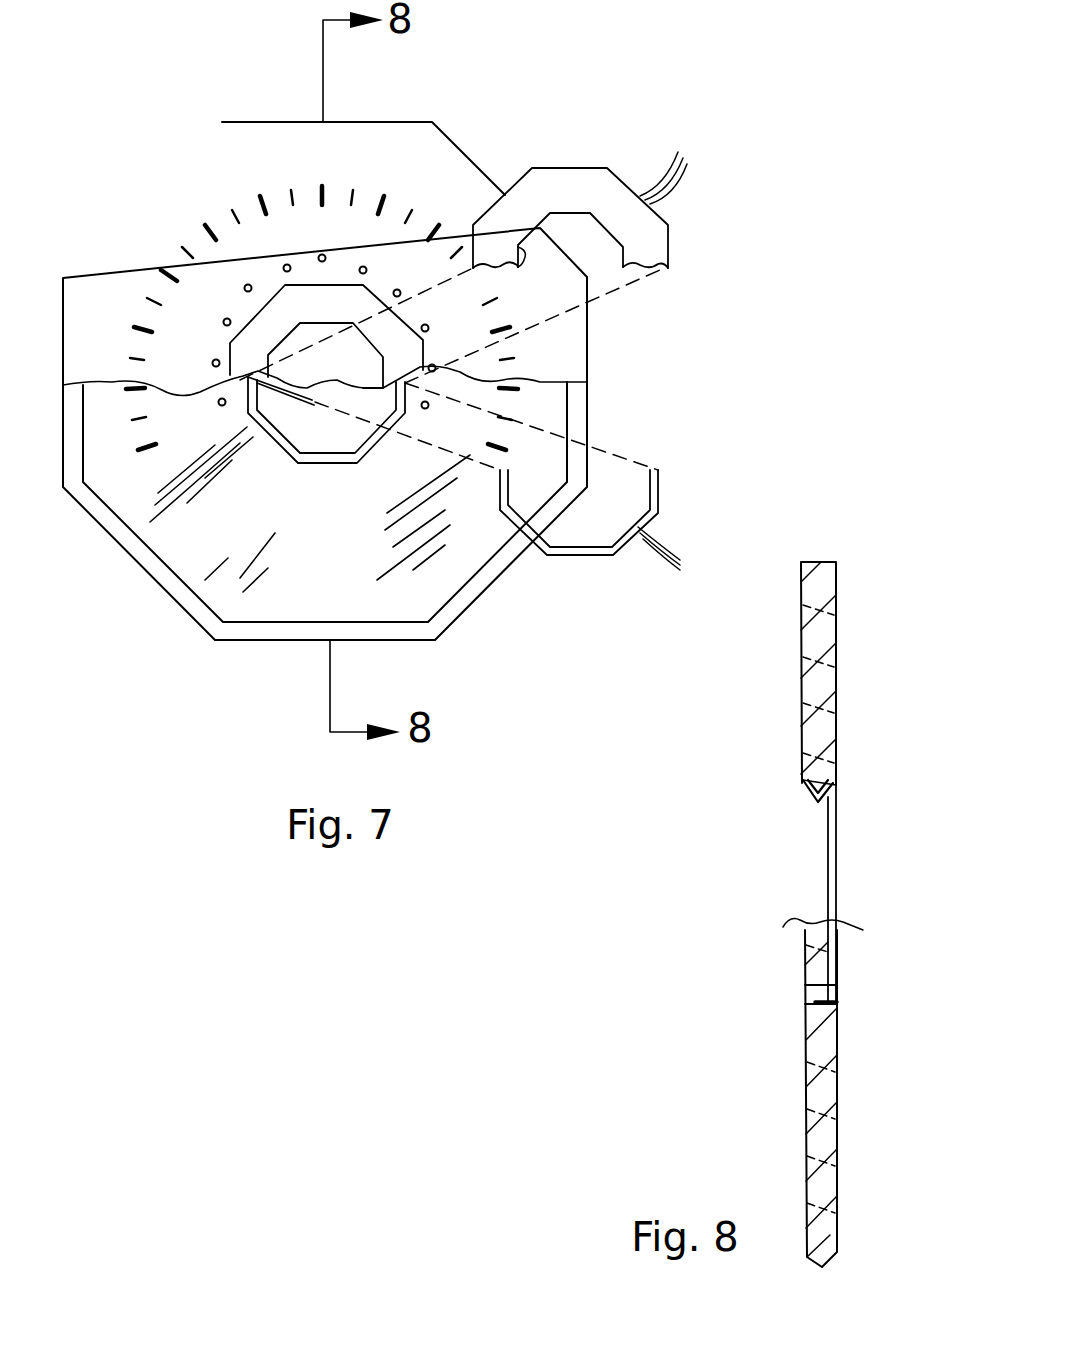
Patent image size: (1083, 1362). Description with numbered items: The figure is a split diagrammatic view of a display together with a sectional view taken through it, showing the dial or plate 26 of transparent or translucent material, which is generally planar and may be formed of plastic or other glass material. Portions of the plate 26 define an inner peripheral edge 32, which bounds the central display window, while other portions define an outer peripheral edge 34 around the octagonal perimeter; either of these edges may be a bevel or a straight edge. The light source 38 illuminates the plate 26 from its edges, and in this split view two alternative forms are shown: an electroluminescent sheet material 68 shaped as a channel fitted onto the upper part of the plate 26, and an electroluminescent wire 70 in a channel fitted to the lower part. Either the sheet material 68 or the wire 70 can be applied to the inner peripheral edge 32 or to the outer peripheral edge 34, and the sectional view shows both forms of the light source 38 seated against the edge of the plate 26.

In FIG. 7, the plate 26 is at (212, 125).
In FIG. 8, the plate 26 is at (810, 914).
In FIG. 7, the inner peripheral edge 32 is at (265, 335).
In FIG. 8, the inner peripheral edge 32 is at (838, 795).
In FIG. 7, the outer peripheral edge 34 is at (360, 120).
In FIG. 8, the outer peripheral edge 34 is at (837, 685).
In FIG. 7, the light source 38 is at (580, 349).
In FIG. 8, the light source 38 is at (819, 907).
In FIG. 7, the electroluminescent sheet material 68 is at (602, 180).
In FIG. 8, the electroluminescent sheet material 68 is at (838, 823).
In FIG. 7, the electroluminescent wire 70 is at (642, 505).
In FIG. 8, the electroluminescent wire 70 is at (838, 995).